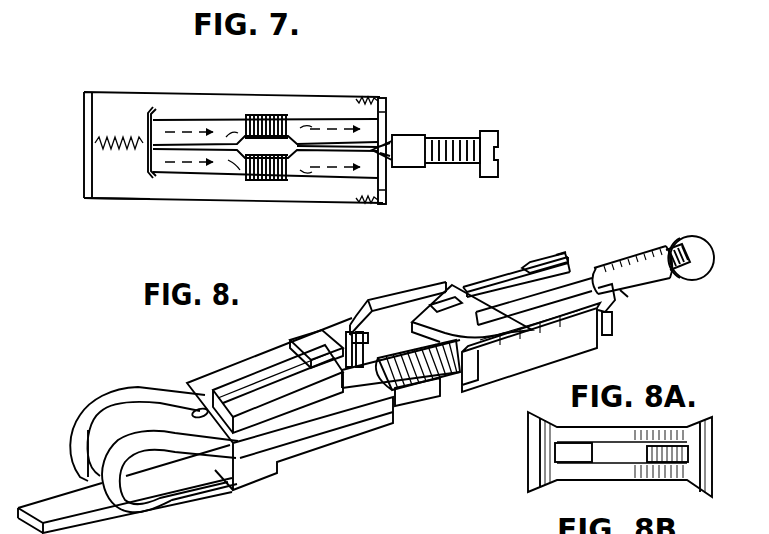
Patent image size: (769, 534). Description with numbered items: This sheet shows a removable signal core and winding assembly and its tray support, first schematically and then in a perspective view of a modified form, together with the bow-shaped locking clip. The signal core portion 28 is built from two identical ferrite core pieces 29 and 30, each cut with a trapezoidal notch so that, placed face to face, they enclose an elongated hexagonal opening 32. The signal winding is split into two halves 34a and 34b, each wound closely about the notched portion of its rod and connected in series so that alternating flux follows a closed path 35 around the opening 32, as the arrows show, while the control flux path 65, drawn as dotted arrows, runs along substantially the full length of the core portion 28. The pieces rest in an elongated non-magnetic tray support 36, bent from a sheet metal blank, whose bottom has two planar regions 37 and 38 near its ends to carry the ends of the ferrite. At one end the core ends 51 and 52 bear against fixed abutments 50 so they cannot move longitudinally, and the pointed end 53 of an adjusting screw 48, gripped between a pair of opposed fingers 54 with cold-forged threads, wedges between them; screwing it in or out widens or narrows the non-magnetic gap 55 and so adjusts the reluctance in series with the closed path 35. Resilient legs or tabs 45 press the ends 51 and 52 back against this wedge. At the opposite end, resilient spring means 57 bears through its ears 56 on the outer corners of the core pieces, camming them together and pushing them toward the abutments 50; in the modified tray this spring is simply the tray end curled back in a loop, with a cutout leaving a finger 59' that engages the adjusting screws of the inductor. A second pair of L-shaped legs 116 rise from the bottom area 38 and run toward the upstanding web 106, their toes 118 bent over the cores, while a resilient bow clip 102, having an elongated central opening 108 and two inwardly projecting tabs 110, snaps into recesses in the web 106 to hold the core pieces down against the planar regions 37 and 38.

In FIG. 8, the signal core portion 28 is at (250, 386).
In FIG. 7, the ferrite core piece 29 is at (214, 120).
In FIG. 8, the ferrite core piece 29 is at (503, 290).
In FIG. 7, the ferrite core piece 30 is at (210, 176).
In FIG. 8, the ferrite core piece 30 is at (536, 338).
In FIG. 7, the elongated hexagonal opening 32 is at (283, 122).
In FIG. 7, the signal winding half 34a is at (266, 114).
In FIG. 8, the signal winding half 34a is at (349, 345).
In FIG. 7, the signal winding half 34b is at (270, 181).
In FIG. 8, the signal winding half 34b is at (430, 386).
In FIG. 7, the closed flux path 35 is at (236, 165).
In FIG. 7, the tray support 36 is at (160, 204).
In FIG. 8, the tray support 36 is at (316, 470).
In FIG. 8, the planar region 37 is at (328, 447).
In FIG. 8, the planar region 38 is at (530, 366).
In FIG. 7, the L-shaped legs 45 is at (365, 100).
In FIG. 8, the L-shaped legs 45 is at (612, 330).
In FIG. 7, the adjusting screw 48 is at (499, 151).
In FIG. 8, the adjusting screw 48 is at (712, 246).
In FIG. 7, the fixed abutments 50 is at (386, 116).
In FIG. 8, the fixed abutments 50 is at (575, 260).
In FIG. 7, the core piece end 51 is at (385, 102).
In FIG. 8, the core piece end 51 is at (546, 264).
In FIG. 7, the core piece end 52 is at (387, 198).
In FIG. 8, the core piece end 52 is at (608, 306).
In FIG. 7, the pointed end of screw 53 is at (398, 137).
In FIG. 7, the opposed fingers 54 is at (418, 168).
In FIG. 8, the opposed fingers 54 is at (628, 264).
In FIG. 7, the non-magnetic gap 55 is at (324, 146).
In FIG. 7, the ears 56 is at (148, 113).
In FIG. 8, the ears 56 is at (207, 406).
In FIG. 7, the resilient spring means 57 is at (113, 152).
In FIG. 8, the resilient spring means 57 is at (113, 400).
In FIG. 8, the finger 59' is at (123, 489).
In FIG. 7, the control flux path 65 is at (178, 157).
In FIG. 8, the resilient bow clip 102 is at (452, 299).
In FIG. 8A, the resilient bow clip 102 is at (692, 417).
In FIG. 8, the upstanding web 106 is at (393, 318).
In FIG. 8A, the elongated central opening 108 is at (610, 458).
In FIG. 8A, the inwardly projecting tabs 110 is at (650, 460).
In FIG. 8, the L-shaped legs 116 is at (268, 356).
In FIG. 8, the toes 118 is at (316, 342).